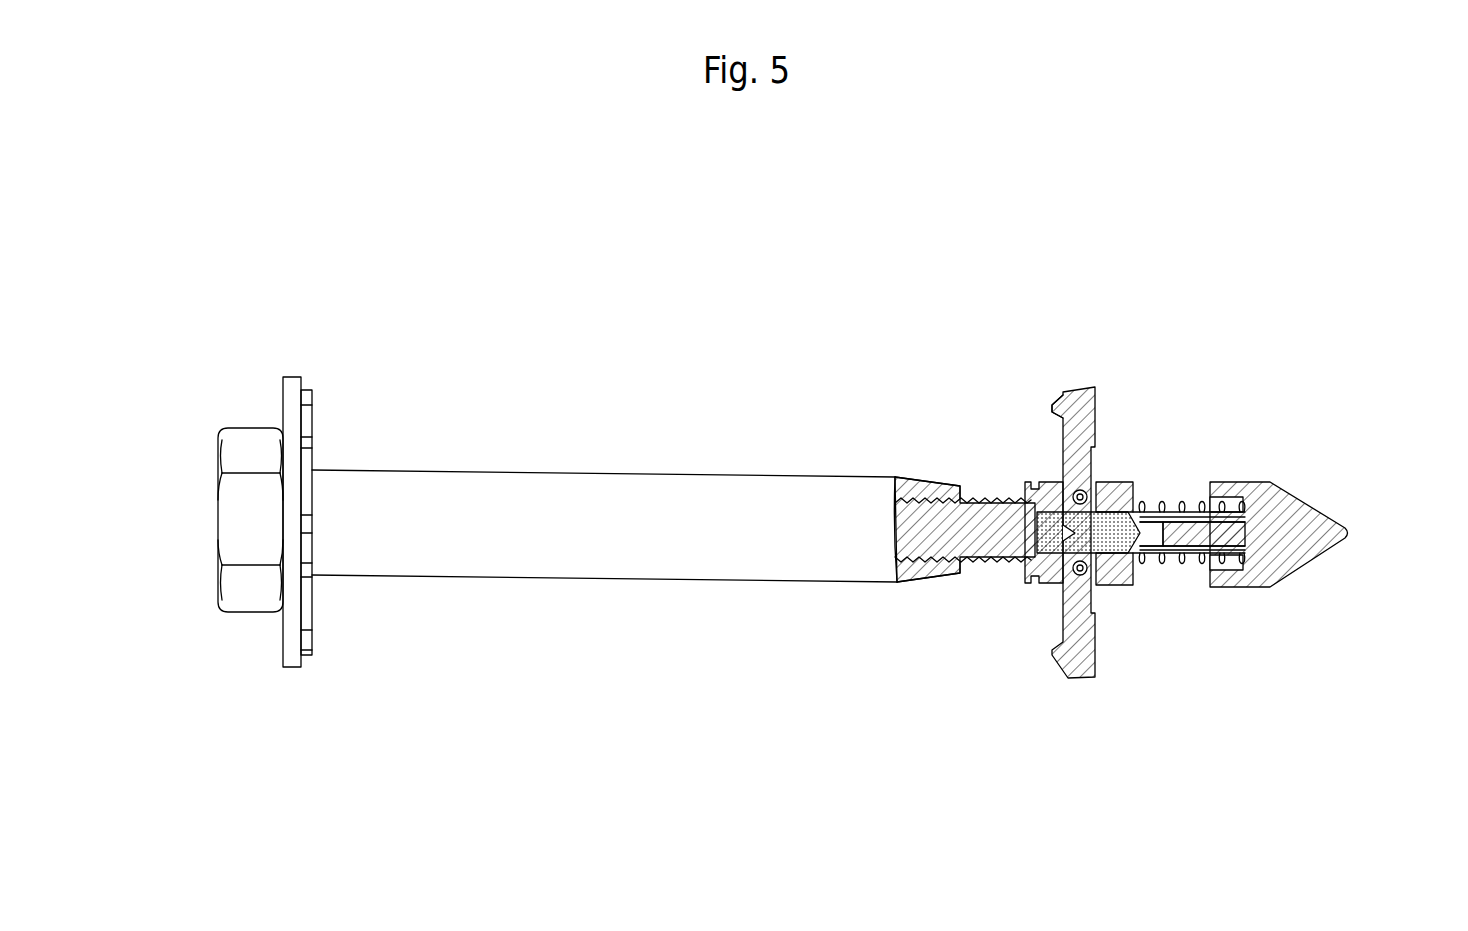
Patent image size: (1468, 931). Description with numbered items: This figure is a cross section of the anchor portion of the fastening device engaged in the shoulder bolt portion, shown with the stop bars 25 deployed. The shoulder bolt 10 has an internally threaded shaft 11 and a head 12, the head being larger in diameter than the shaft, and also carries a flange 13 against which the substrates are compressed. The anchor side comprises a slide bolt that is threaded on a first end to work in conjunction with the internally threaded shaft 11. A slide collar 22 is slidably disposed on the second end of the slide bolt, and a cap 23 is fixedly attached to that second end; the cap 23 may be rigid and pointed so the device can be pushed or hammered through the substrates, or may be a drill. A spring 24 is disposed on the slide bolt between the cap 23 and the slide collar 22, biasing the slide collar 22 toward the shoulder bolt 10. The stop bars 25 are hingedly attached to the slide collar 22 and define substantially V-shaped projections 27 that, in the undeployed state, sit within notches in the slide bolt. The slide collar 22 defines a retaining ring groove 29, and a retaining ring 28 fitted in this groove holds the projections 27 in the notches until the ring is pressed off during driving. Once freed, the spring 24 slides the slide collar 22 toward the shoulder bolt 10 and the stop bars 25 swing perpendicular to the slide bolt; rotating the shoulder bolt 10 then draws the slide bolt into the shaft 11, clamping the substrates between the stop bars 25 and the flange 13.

The shoulder bolt 10 is at (771, 398).
The internally threaded shaft 11 is at (573, 540).
The head 12 is at (238, 520).
The flange 13 is at (290, 658).
The slide collar 22 is at (1115, 490).
The cap 23 is at (1307, 523).
The spring 24 is at (1168, 580).
The stop bars 25 is at (1080, 643).
The V-shaped projections 27 is at (1052, 408).
The retaining ring 28 is at (313, 433).
The retaining ring groove 29 is at (1037, 585).